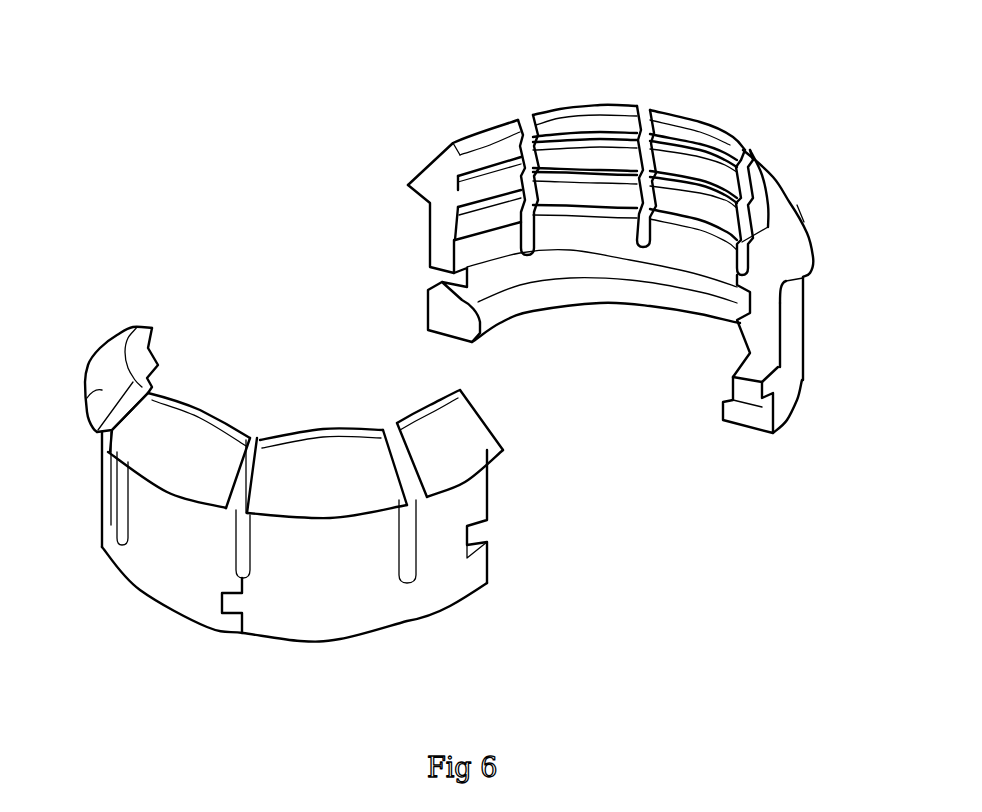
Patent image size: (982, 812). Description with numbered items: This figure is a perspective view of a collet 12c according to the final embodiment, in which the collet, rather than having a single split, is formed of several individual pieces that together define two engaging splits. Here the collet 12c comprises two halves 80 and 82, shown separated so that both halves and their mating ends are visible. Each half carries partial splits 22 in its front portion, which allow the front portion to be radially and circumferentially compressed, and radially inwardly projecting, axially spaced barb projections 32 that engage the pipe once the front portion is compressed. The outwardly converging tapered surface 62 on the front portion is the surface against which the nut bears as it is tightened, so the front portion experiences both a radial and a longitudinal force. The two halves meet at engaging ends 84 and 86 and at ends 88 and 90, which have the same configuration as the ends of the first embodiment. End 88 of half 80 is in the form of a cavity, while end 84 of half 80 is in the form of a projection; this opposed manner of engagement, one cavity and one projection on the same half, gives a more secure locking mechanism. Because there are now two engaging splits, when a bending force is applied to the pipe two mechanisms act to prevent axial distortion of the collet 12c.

The collet 12c is at (623, 231).
The half 80 is at (493, 128).
The partial split 22 is at (533, 132).
The barb projection 32 is at (690, 167).
The outwardly converging tapered surface 62 is at (810, 207).
The end 88 is at (477, 268).
The engaging end 84 is at (787, 372).
The half 82 is at (178, 387).
The end 90 is at (100, 483).
The engaging end 86 is at (457, 555).